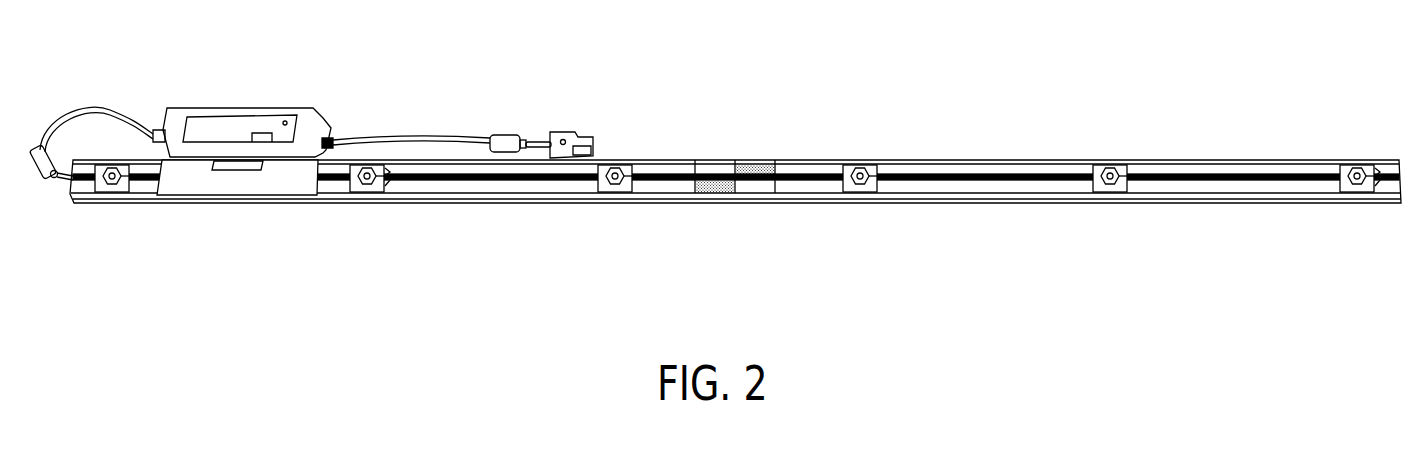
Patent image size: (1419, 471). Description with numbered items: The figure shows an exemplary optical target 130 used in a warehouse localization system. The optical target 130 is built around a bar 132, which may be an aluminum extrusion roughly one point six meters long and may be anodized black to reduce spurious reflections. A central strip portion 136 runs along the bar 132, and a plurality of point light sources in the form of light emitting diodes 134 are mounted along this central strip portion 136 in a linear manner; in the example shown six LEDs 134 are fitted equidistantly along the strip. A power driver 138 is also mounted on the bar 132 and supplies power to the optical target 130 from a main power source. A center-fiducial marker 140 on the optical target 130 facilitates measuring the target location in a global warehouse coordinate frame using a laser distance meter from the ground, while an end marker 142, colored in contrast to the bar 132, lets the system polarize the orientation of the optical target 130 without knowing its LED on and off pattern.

The optical target 130 is at (715, 162).
The bar 132 is at (812, 170).
The light emitting diodes 134 is at (852, 212).
The central strip portion 136 is at (1255, 178).
The power driver 138 is at (182, 122).
The center-fiducial marker 140 is at (722, 138).
The end marker 142 is at (300, 186).